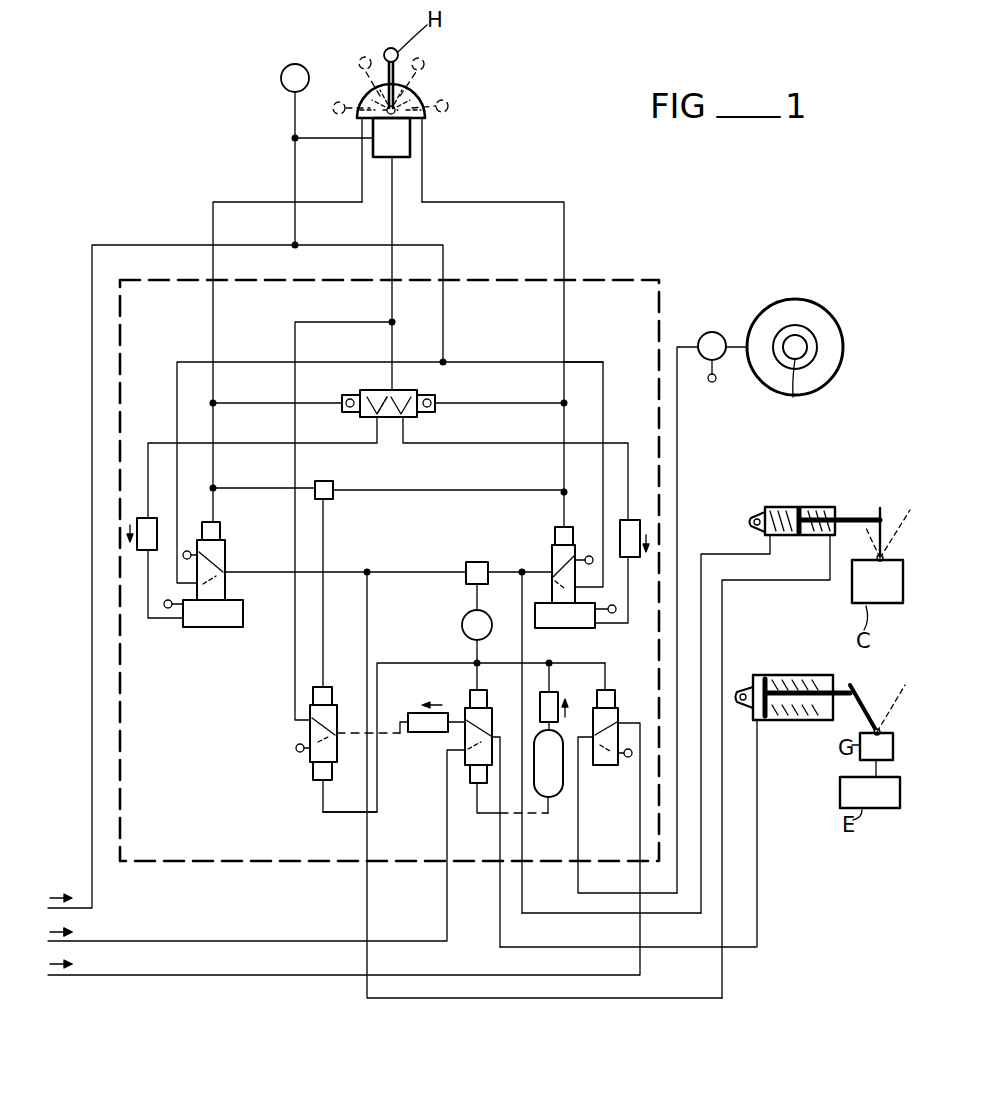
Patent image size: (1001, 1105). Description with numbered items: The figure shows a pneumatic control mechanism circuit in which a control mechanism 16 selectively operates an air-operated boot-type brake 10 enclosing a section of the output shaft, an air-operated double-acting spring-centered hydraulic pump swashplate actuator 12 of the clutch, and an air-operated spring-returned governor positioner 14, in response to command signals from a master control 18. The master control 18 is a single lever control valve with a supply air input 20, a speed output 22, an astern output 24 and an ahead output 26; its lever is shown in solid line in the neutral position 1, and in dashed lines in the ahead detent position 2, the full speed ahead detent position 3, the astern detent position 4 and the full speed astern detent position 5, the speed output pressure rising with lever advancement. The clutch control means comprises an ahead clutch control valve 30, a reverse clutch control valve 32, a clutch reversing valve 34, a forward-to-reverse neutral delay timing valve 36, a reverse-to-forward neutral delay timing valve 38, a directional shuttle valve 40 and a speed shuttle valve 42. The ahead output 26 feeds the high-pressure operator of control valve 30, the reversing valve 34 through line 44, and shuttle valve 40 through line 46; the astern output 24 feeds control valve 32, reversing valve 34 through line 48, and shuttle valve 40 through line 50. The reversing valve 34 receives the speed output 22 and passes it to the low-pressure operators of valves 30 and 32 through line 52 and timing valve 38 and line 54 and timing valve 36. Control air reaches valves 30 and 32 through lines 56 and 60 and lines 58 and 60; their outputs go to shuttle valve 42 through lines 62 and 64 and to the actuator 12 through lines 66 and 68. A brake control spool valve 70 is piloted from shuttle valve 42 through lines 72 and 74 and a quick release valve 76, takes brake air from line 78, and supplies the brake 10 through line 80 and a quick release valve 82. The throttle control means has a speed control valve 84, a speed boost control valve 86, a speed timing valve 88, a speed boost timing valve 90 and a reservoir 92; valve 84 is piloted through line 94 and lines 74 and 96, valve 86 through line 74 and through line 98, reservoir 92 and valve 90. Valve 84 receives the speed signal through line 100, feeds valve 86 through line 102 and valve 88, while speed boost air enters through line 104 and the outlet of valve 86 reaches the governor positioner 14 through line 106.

The neutral position 1 is at (396, 52).
The ahead detent position 2 is at (426, 60).
The full speed ahead detent position 3 is at (450, 100).
The astern detent position 4 is at (360, 60).
The full speed astern detent position 5 is at (336, 100).
The boot-type brake 10 is at (787, 300).
The hydraulic pump swashplate actuator 12 is at (790, 507).
The governor positioner 14 is at (788, 675).
The control mechanism 16 is at (658, 274).
The master control 18 is at (455, 121).
The supply air input 20 is at (300, 162).
The speed output 22 is at (390, 213).
The astern output 24 is at (362, 180).
The ahead output 26 is at (507, 200).
The ahead clutch control valve 30 is at (577, 542).
The reverse clutch control valve 32 is at (226, 552).
The clutch reversing valve 34 is at (410, 390).
The forward-to-reverse neutral delay timing valve 36 is at (142, 517).
The reverse-to-forward neutral delay timing valve 38 is at (638, 518).
The directional shuttle valve 40 is at (340, 486).
The speed shuttle valve 42 is at (475, 561).
The line 44 is at (512, 405).
The line 46 is at (493, 490).
The line 48 is at (256, 402).
The line 50 is at (255, 487).
The line 52 is at (628, 443).
The line 54 is at (154, 441).
The line 56 is at (595, 362).
The line 58 is at (242, 360).
The line 60 is at (430, 244).
The line 62 is at (531, 570).
The line 64 is at (405, 570).
The line 66 is at (548, 913).
The line 68 is at (365, 912).
The brake control spool valve 70 is at (620, 708).
The line 72 is at (580, 664).
The line 74 is at (476, 656).
The quick release valve 76 is at (463, 615).
The line 78 is at (640, 802).
The line 80 is at (579, 850).
The quick release valve 82 is at (712, 332).
The speed control valve 84 is at (300, 755).
The speed boost control valve 86 is at (464, 708).
The speed timing valve 88 is at (413, 710).
The speed boost timing valve 90 is at (557, 700).
The reservoir 92 is at (553, 800).
The line 94 is at (323, 636).
The line 96 is at (326, 812).
The line 98 is at (479, 815).
The line 100 is at (293, 650).
The line 102 is at (350, 733).
The line 104 is at (412, 941).
The line 106 is at (595, 947).